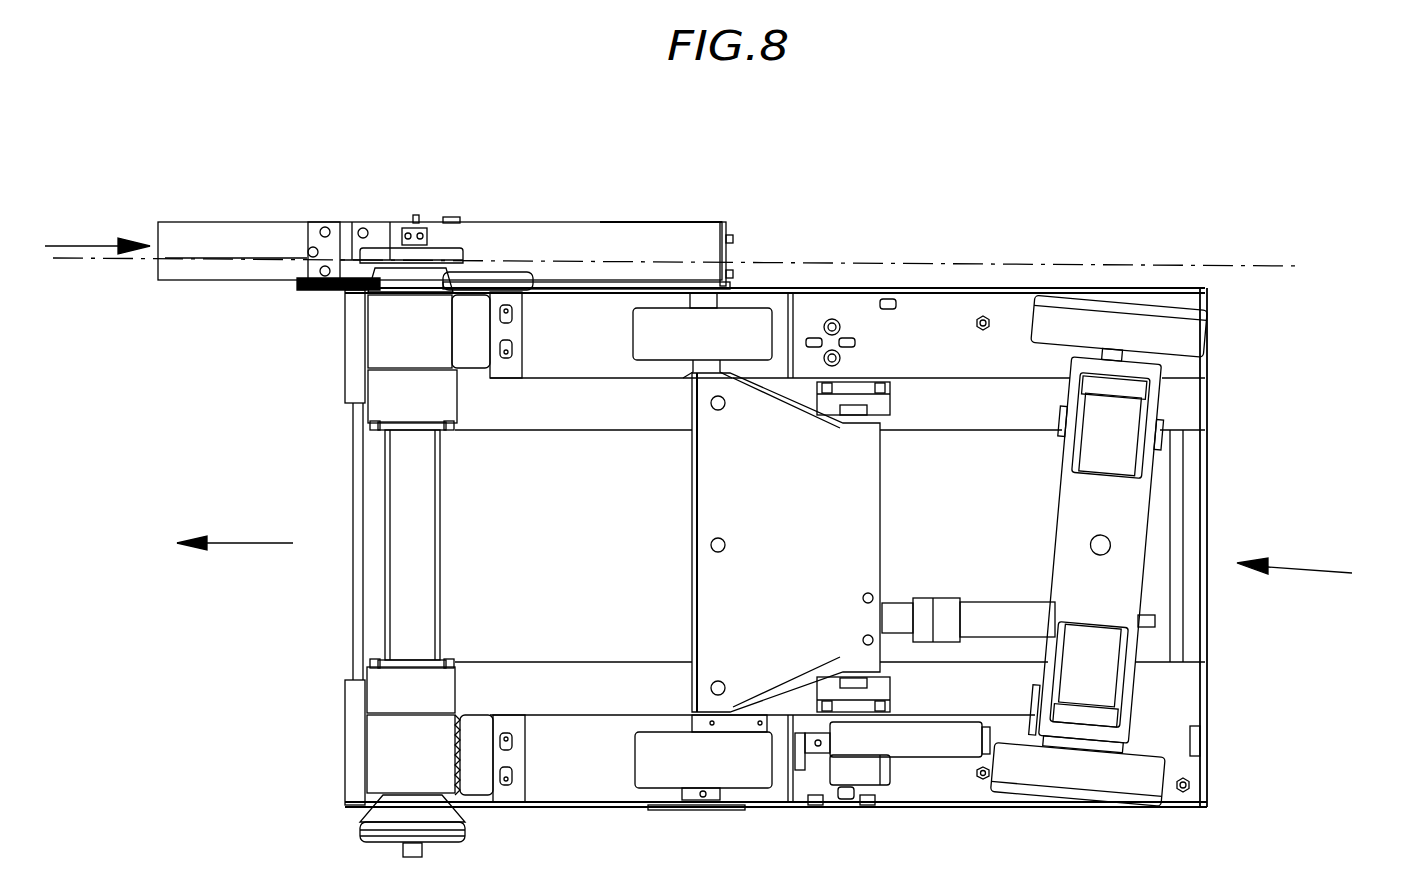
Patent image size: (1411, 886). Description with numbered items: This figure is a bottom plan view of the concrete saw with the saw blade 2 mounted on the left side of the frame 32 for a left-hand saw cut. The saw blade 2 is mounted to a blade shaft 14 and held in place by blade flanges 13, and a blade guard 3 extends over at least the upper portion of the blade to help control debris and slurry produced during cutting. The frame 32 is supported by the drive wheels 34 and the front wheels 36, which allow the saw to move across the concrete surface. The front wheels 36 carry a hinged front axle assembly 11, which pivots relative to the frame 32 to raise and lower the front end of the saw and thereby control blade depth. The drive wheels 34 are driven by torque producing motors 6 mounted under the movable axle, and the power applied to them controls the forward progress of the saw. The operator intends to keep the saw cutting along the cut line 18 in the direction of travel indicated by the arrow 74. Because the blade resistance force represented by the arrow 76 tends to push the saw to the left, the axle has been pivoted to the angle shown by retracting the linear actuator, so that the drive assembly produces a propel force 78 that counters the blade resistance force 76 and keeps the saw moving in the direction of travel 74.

The saw blade 2 is at (565, 248).
The blade guard 3 is at (680, 222).
The torque producing motors 6 is at (1120, 415).
The hinged front axle assembly 11 is at (730, 502).
The blade flanges 13 is at (458, 240).
The blade shaft 14 is at (398, 625).
The cut line 18 is at (868, 265).
The frame 32 is at (355, 410).
The drive wheels 34 is at (1170, 332).
The front wheels 36 is at (668, 768).
The direction of travel 74 is at (240, 543).
The blade resistance force 76 is at (80, 246).
The propel force 78 is at (1313, 570).